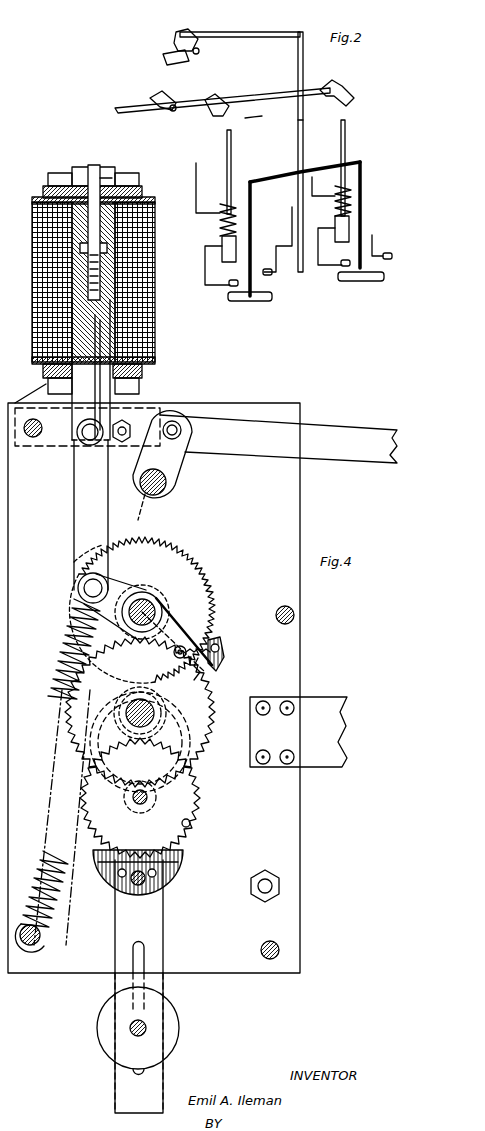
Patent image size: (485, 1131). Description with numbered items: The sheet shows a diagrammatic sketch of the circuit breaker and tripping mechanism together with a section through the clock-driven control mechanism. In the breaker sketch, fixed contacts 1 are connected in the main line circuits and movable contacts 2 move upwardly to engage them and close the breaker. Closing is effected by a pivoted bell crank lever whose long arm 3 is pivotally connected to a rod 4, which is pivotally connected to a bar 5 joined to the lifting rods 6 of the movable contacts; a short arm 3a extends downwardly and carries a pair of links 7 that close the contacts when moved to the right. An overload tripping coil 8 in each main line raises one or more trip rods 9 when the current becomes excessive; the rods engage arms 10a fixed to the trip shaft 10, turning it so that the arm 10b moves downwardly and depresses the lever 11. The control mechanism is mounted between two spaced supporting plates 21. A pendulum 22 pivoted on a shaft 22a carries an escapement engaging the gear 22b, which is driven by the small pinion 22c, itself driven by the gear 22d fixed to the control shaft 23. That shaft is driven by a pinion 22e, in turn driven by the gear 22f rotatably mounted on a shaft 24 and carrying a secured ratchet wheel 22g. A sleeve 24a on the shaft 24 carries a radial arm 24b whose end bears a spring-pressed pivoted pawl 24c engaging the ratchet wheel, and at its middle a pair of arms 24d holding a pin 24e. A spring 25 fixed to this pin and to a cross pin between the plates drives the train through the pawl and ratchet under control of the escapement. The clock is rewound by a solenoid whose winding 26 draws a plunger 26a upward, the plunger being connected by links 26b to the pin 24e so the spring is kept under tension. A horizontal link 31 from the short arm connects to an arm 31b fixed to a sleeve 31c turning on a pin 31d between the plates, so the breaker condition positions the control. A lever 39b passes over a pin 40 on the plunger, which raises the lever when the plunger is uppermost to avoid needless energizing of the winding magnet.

In FIG. 2, the fixed contacts 1 is at (400, 262).
In FIG. 2, the movable contacts 2 is at (366, 295).
In FIG. 2, the long arm 3 is at (243, 36).
In FIG. 2, the short arm 3a is at (176, 40).
In FIG. 2, the rod 4 is at (303, 128).
In FIG. 2, the bar 5 is at (283, 178).
In FIG. 2, the lifting rods 6 is at (372, 212).
In FIG. 2, the links 7 is at (166, 62).
In FIG. 2, the overload tripping coil 8 is at (318, 212).
In FIG. 2, the trip rods 9 is at (360, 138).
In FIG. 2, the trip shaft 10 is at (270, 92).
In FIG. 2, the arms 10a is at (345, 66).
In FIG. 2, the arm 10b is at (163, 97).
In FIG. 2, the lever 11 is at (138, 110).
In FIG. 4, the supporting plates 21 is at (300, 502).
In FIG. 4, the pendulum 22 is at (108, 1008).
In FIG. 4, the shaft 22a is at (160, 892).
In FIG. 4, the gear 22b is at (190, 823).
In FIG. 4, the small pinion 22c is at (140, 806).
In FIG. 4, the gear 22d is at (228, 752).
In FIG. 4, the pinion 22e is at (170, 718).
In FIG. 4, the gear 22f is at (210, 582).
In FIG. 4, the ratchet wheel 22g is at (200, 570).
In FIG. 4, the control shaft 23 is at (140, 730).
In FIG. 4, the shaft 24 is at (146, 598).
In FIG. 4, the sleeve 24a is at (118, 592).
In FIG. 4, the arm 24b is at (210, 617).
In FIG. 4, the pawl 24c is at (222, 660).
In FIG. 4, the arms 24d is at (162, 548).
In FIG. 4, the pin 24e is at (78, 590).
In FIG. 4, the spring 25 is at (70, 900).
In FIG. 4, the winding 26 is at (150, 330).
In FIG. 4, the plunger 26a is at (100, 350).
In FIG. 4, the links 26b is at (82, 506).
In FIG. 4, the link 31 is at (335, 420).
In FIG. 4, the arm 31b is at (192, 470).
In FIG. 4, the sleeve 31c is at (166, 486).
In FIG. 4, the pin 31d is at (135, 520).
In FIG. 4, the lever 39b is at (106, 150).
In FIG. 4, the pin 40 is at (110, 180).